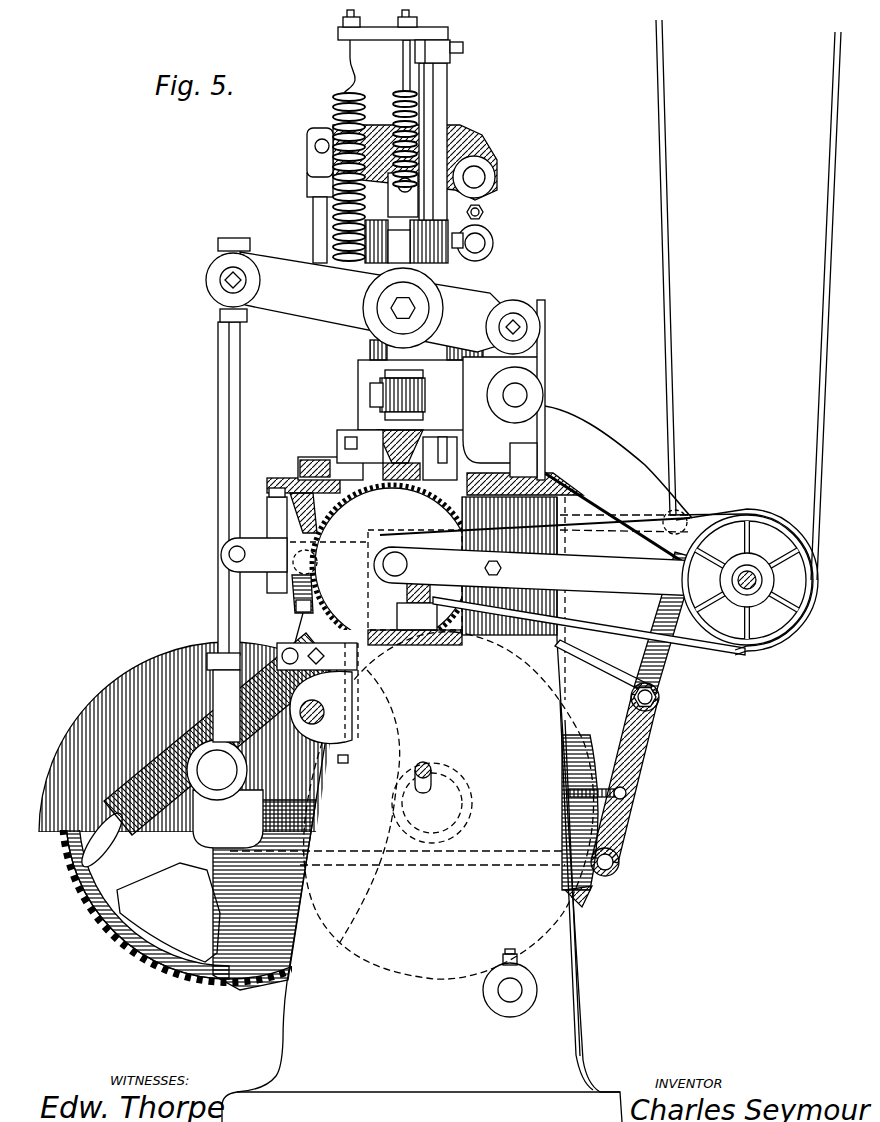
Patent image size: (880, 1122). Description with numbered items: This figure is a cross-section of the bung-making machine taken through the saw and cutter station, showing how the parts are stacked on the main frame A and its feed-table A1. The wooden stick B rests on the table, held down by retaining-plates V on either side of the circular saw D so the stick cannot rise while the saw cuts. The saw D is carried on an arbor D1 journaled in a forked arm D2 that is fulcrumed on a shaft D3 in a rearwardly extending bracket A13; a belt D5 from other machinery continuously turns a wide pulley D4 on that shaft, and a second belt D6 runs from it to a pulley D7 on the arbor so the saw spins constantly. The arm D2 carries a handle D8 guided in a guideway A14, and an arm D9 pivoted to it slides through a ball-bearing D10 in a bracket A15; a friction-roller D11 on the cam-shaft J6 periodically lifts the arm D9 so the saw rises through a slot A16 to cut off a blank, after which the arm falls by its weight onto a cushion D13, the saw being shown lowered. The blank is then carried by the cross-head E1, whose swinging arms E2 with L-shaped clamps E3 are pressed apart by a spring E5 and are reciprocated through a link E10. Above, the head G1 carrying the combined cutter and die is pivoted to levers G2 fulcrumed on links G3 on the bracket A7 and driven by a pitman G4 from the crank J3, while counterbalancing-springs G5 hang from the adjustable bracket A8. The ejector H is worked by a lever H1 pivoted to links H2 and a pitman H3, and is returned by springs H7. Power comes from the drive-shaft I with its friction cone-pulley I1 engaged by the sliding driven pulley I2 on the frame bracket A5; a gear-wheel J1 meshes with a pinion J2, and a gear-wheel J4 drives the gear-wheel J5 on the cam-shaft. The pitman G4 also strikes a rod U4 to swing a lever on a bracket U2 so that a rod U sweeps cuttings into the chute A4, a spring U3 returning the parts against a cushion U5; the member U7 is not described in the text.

The main frame A is at (580, 1022).
The feed-table A1 is at (560, 478).
The chute A4 is at (101, 840).
The bracket A5 is at (505, 993).
The bracket A7 is at (420, 395).
The bracket A8 is at (446, 37).
The bracket A13 is at (602, 432).
The guideway A14 is at (275, 524).
The bracket A15 is at (357, 668).
The slot A16 is at (349, 438).
The wooden stick B is at (398, 485).
The circular saw D is at (381, 565).
The arbor D1 is at (408, 564).
The forked arm D2 is at (624, 588).
The shaft D3 is at (756, 572).
The pulley D4 is at (780, 636).
The belt D5 is at (826, 382).
The second belt D6 is at (612, 640).
The pulley D7 is at (372, 560).
The handle D8 is at (229, 554).
The arm D9 is at (292, 598).
The ball-bearing D10 is at (321, 707).
The friction-roller D11 is at (315, 728).
The cushion D13 is at (405, 598).
The cross-head E1 is at (442, 455).
The swinging arms E2 is at (430, 464).
The L-shaped clamps E3 is at (350, 470).
The spring E5 is at (452, 512).
The link E10 is at (428, 765).
The head G1 is at (415, 448).
The levers G2 is at (288, 310).
The links G3 is at (538, 374).
The pitman G4 is at (218, 468).
The counterbalancing-springs G5 is at (340, 108).
The ejector H is at (396, 204).
The lever H1 is at (458, 140).
The links H2 is at (485, 213).
The pitman H3 is at (313, 234).
The springs H7 is at (396, 96).
The drive-shaft I is at (470, 805).
The friction cone-pulley I1 is at (565, 762).
The driven pulley I2 is at (583, 895).
The gear-wheel J1 is at (105, 928).
The pinion J2 is at (462, 822).
The crank J3 is at (225, 794).
The gear-wheel J4 is at (196, 870).
The gear-wheel J5 is at (346, 765).
The cam-shaft J6 is at (315, 712).
The rod U is at (580, 512).
The bracket U2 is at (665, 697).
The spring U3 is at (628, 803).
The rod U4 is at (298, 862).
The cushion U5 is at (565, 870).
The arm U7 is at (646, 757).
The retaining-plates V is at (345, 455).